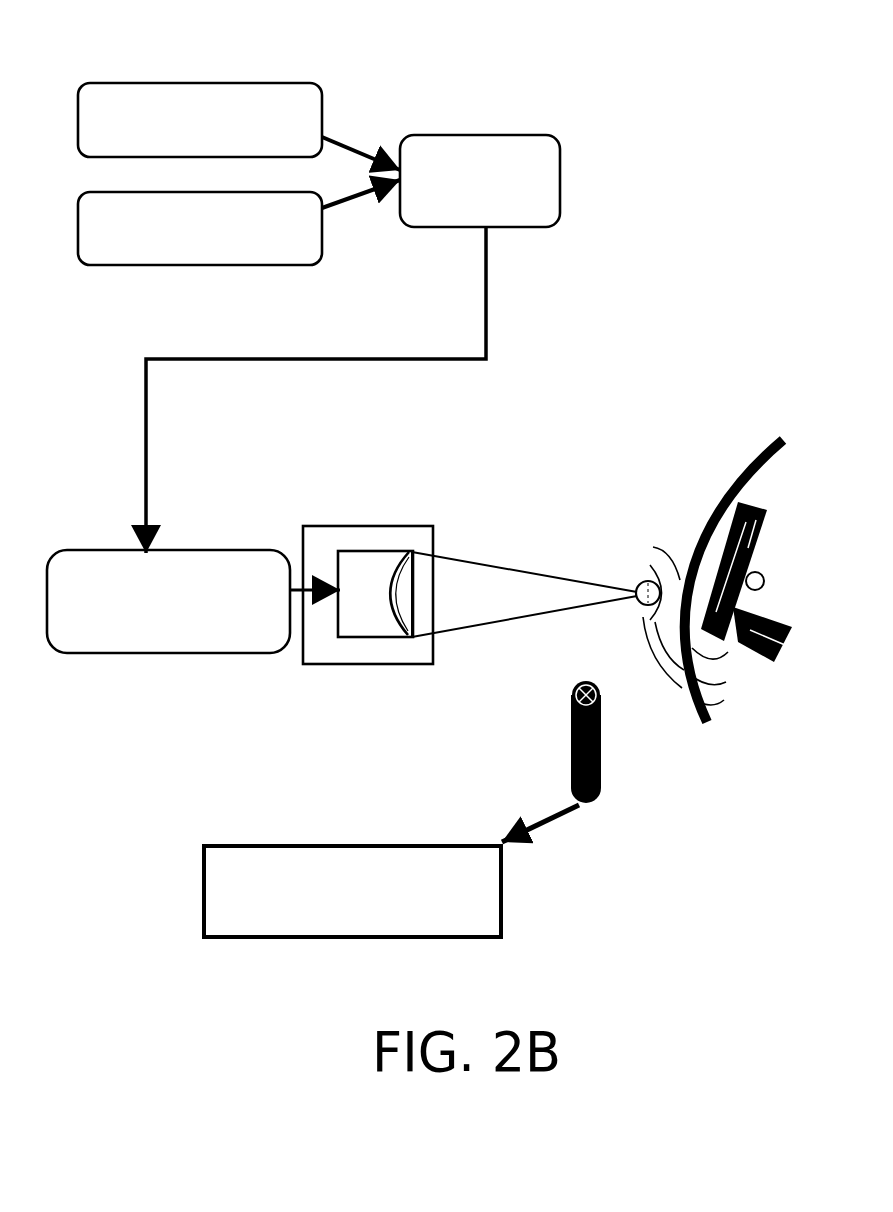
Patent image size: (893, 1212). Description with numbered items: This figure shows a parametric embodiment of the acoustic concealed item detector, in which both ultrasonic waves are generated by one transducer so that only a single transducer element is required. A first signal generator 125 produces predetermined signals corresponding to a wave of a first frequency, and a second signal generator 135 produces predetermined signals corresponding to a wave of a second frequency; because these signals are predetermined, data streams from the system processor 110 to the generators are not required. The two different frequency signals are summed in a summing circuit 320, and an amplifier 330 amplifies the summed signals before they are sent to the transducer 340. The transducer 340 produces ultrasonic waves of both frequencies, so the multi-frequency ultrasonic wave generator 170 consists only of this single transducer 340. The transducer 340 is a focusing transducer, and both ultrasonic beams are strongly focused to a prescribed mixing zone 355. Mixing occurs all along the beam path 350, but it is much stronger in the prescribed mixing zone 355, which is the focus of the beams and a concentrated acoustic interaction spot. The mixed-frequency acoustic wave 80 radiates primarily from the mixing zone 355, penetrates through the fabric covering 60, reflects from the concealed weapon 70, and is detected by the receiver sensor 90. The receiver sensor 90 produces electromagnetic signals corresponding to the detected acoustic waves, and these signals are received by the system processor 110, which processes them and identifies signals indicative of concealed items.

The first signal generator 125 is at (217, 83).
The second signal generator 135 is at (232, 265).
The summing circuit 320 is at (488, 135).
The amplifier 330 is at (118, 555).
The transducer 340 is at (388, 553).
The multi-frequency ultrasonic wave generator 170 is at (343, 668).
The beam path 350 is at (502, 563).
The prescribed mixing zone 355 is at (643, 577).
The mixed-frequency acoustic wave 80 is at (655, 677).
The fabric covering 60 is at (700, 722).
The concealed weapon 70 is at (742, 487).
The receiver sensor 90 is at (572, 722).
The system processor 110 is at (376, 930).